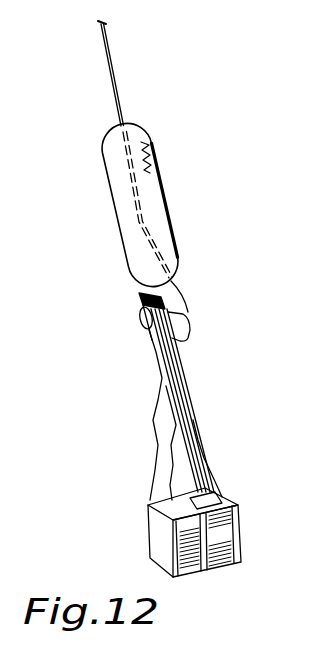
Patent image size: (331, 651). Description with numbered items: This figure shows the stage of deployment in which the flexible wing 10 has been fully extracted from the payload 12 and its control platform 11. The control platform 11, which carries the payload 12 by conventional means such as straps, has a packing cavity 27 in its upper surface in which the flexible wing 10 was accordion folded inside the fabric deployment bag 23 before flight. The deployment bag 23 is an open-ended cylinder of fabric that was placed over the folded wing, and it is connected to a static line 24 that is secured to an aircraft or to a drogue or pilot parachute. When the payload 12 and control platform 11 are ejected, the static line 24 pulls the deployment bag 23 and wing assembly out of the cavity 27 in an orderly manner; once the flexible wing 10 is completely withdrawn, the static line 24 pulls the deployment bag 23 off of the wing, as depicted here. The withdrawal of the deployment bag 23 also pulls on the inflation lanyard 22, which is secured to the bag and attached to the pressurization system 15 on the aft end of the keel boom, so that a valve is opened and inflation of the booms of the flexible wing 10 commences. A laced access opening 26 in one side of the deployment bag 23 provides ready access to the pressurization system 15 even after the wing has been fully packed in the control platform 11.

The flexible wing 10 is at (192, 363).
The control platform 11 is at (232, 509).
The payload 12 is at (222, 542).
The pressurization system 15 is at (185, 340).
The inflation lanyard 22 is at (179, 283).
The deployment bag 23 is at (167, 205).
The static line 24 is at (112, 58).
The laced access opening 26 is at (151, 152).
The packing cavity 27 is at (204, 495).